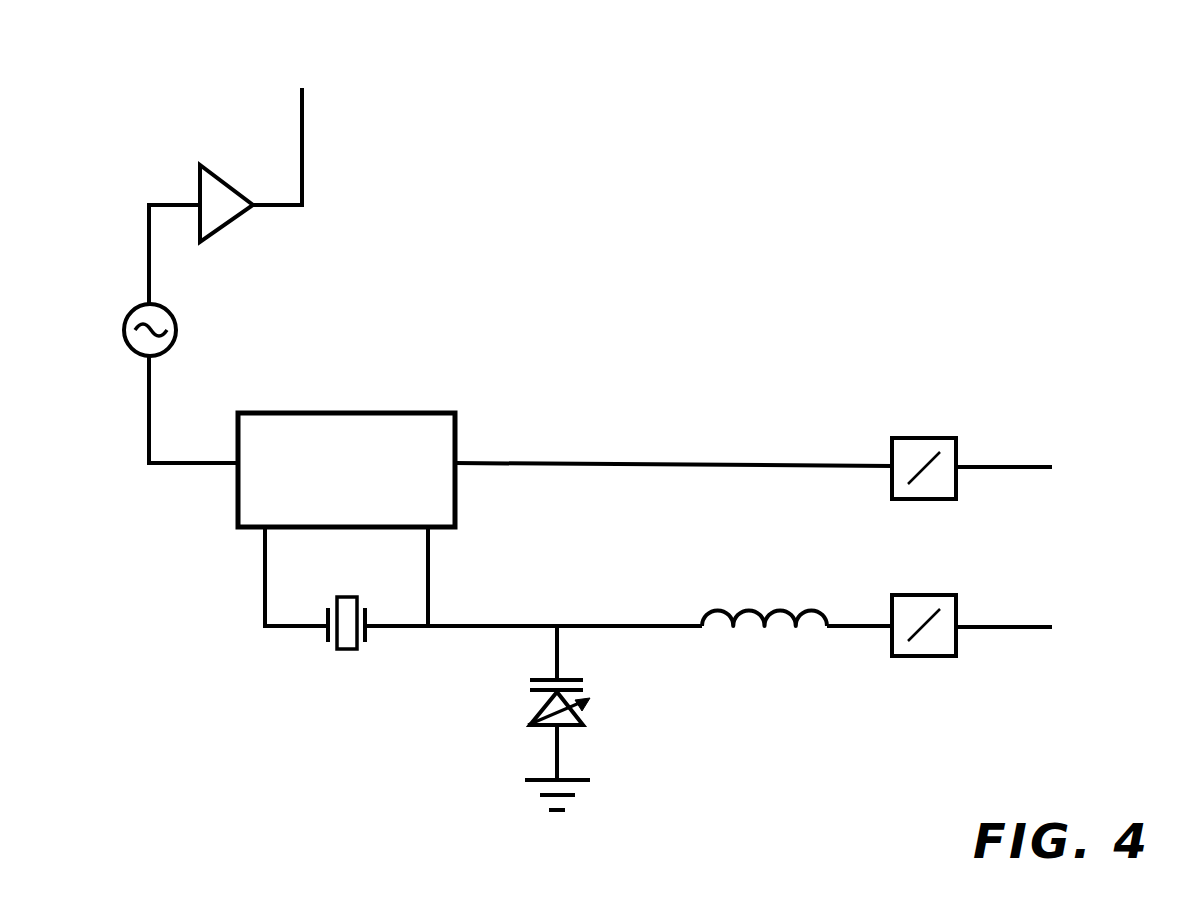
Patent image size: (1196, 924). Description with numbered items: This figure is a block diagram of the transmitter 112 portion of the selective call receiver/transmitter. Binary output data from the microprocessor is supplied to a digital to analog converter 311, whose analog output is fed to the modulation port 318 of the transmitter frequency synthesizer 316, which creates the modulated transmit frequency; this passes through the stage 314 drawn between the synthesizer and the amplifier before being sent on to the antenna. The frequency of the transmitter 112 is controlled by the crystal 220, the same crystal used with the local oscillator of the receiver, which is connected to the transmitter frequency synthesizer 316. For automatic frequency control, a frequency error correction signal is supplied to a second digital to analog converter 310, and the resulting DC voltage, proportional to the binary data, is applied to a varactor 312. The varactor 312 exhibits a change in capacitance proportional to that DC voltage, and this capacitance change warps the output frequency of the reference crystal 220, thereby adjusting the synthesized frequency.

The transmitter 112 is at (90, 107).
The oscillator / mixer 314 is at (178, 330).
The transmitter frequency synthesizer 316 is at (290, 412).
The modulation port 318 is at (455, 455).
The digital to analog (D/A) converter 311 is at (932, 437).
The digital to analog (D/A) converter 310 is at (932, 595).
The crystal 220 is at (345, 653).
The varactor 312 is at (540, 707).